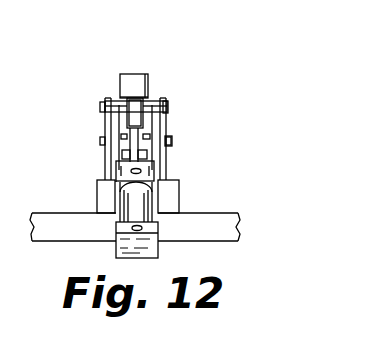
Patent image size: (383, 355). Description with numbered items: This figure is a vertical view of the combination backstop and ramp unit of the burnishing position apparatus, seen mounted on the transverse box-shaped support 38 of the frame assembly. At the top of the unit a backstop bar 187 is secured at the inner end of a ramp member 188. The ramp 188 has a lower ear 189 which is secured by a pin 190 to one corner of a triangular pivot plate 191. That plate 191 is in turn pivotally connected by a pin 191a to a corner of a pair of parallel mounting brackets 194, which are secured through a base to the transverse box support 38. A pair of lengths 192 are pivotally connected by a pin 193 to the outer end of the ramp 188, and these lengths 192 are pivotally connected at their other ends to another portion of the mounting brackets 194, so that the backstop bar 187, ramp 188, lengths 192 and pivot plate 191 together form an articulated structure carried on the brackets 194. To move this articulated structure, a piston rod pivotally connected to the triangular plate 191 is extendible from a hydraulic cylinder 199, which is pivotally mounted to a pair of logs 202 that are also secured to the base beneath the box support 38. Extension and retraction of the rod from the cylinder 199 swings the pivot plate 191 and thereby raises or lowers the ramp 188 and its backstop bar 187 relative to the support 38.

The backstop bar 187 is at (132, 77).
The ramp member 188 is at (137, 97).
The lengths 192 is at (165, 100).
The pin 193 is at (103, 108).
The lower ear 189 is at (152, 113).
The pin 190 is at (134, 139).
The triangular pivot plate 191 is at (170, 143).
The pin 191a is at (154, 166).
The mounting brackets 194 is at (116, 170).
The logs 202 is at (98, 197).
The hydraulic cylinder 199 is at (153, 211).
The transverse box-shaped support 38 is at (243, 226).